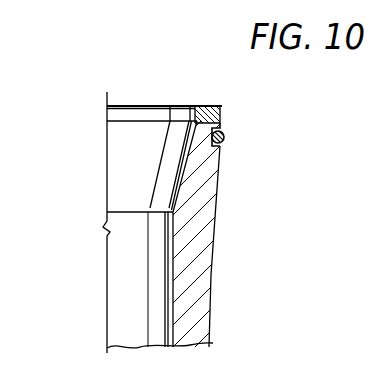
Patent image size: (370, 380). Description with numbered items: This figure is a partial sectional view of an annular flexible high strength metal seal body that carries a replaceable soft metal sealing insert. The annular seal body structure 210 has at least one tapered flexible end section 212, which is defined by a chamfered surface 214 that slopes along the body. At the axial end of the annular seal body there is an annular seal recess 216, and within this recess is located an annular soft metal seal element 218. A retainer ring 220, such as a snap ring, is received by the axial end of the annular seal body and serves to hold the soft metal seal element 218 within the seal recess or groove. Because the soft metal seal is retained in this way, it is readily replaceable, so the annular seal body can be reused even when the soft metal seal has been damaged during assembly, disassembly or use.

The annular seal body structure 210 is at (200, 291).
The tapered flexible end section 212 is at (200, 203).
The chamfered surface 214 is at (183, 170).
The annular seal recess 216 is at (223, 137).
The annular soft metal seal element 218 is at (223, 139).
The retainer ring 220 is at (209, 105).